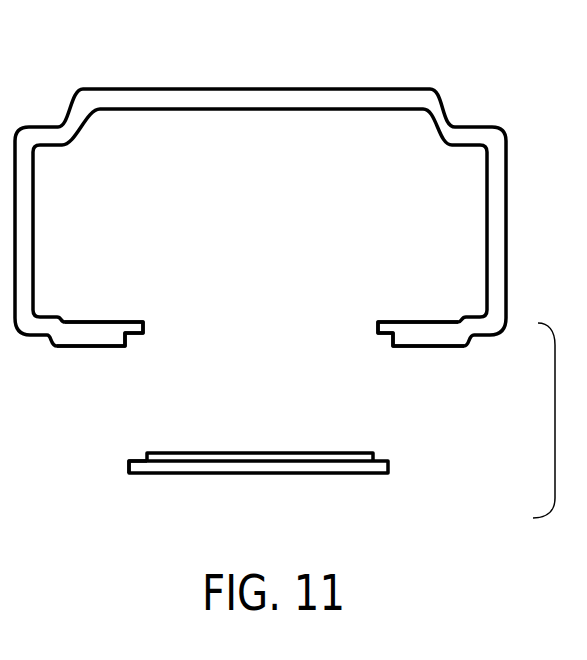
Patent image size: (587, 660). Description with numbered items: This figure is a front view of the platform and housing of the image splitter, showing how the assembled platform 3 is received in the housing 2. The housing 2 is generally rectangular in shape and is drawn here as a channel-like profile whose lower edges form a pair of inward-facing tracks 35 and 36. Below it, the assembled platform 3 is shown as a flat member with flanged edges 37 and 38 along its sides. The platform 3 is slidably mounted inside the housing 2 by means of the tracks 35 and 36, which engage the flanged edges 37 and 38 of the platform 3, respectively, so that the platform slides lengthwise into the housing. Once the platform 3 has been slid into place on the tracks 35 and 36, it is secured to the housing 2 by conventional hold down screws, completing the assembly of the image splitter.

The housing 2 is at (302, 89).
The platform 3 is at (290, 473).
The track 35 is at (130, 342).
The track 36 is at (390, 338).
The flanged edge 37 is at (127, 472).
The flanged edge 38 is at (390, 472).